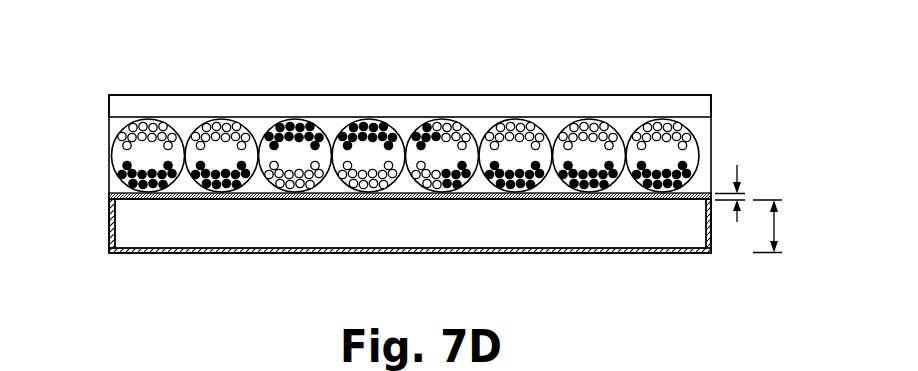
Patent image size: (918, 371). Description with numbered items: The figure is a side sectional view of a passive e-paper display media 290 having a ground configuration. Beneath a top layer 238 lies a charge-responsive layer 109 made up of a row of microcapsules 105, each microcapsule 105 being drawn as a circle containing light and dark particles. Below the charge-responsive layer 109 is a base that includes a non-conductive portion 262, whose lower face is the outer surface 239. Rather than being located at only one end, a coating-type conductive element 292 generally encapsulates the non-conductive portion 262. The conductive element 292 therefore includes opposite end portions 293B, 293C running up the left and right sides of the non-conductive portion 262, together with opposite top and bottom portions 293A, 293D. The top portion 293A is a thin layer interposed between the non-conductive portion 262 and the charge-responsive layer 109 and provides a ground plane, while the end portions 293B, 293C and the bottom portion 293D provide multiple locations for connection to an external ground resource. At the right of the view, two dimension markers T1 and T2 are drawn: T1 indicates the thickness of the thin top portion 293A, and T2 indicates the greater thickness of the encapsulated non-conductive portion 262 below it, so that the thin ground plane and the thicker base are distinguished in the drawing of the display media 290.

The e-paper display media 290 is at (303, 57).
The top layer 238 is at (402, 95).
The microcapsule 105 is at (178, 119).
The charge-responsive layer 109 is at (376, 128).
The top portion 293A is at (155, 201).
The outer surface 239 is at (201, 254).
The coating-type conductive element 292 is at (532, 254).
The non-conductive portion 262 is at (320, 238).
The end portion 293B is at (112, 224).
The end portion 293C is at (711, 235).
The bottom portion 293D is at (655, 254).
The thickness T1 is at (730, 184).
The thickness T2 is at (780, 226).